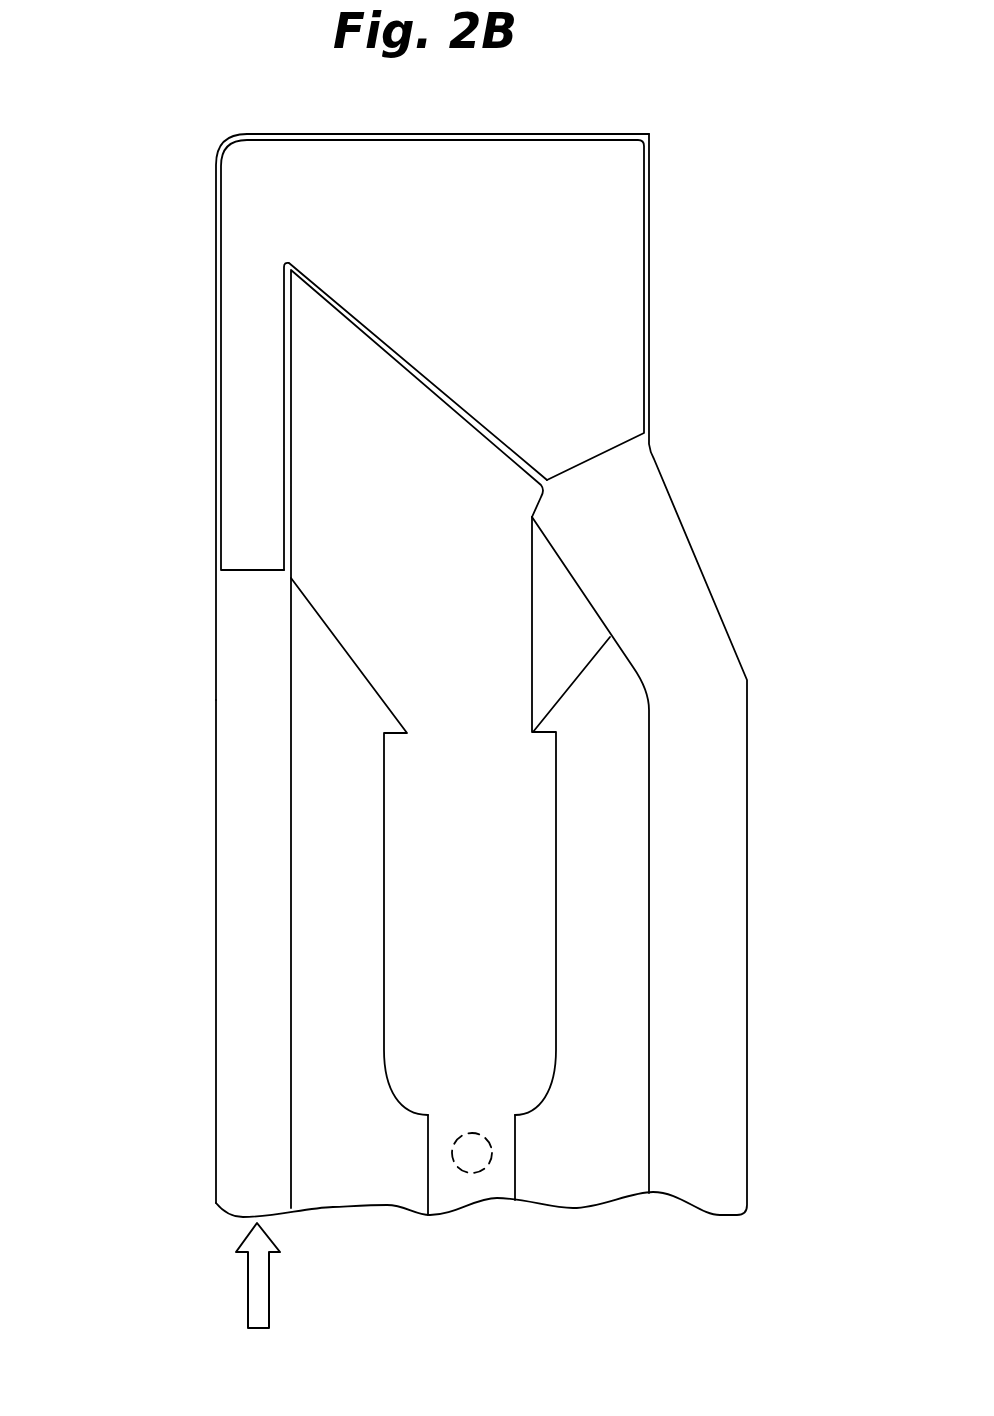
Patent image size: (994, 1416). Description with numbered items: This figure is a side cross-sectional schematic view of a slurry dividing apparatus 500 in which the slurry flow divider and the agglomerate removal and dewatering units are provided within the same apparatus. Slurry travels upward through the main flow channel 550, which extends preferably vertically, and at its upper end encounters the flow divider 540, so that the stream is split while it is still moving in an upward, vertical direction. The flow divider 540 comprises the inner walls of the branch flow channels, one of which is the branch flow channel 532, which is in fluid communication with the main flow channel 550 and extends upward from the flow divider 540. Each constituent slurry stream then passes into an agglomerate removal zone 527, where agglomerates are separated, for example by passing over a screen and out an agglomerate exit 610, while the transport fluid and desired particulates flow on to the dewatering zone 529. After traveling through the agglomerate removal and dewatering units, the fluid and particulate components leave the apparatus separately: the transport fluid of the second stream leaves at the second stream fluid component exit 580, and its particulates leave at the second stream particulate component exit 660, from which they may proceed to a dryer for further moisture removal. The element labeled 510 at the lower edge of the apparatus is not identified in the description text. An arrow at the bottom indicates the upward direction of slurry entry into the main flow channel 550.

The slurry dividing apparatus 500 is at (196, 104).
The flow divider 540 is at (590, 172).
The branch flow channel 532 is at (213, 368).
The agglomerate removal zone 527 is at (467, 427).
The dewatering zone 529 is at (525, 957).
The main flow channel 550 is at (208, 1064).
The bottom edge 510 is at (217, 1205).
The second stream fluid component exit 580 is at (445, 1217).
The second stream particulate component exit 660 is at (483, 1157).
The agglomerate exit 610 is at (723, 1217).